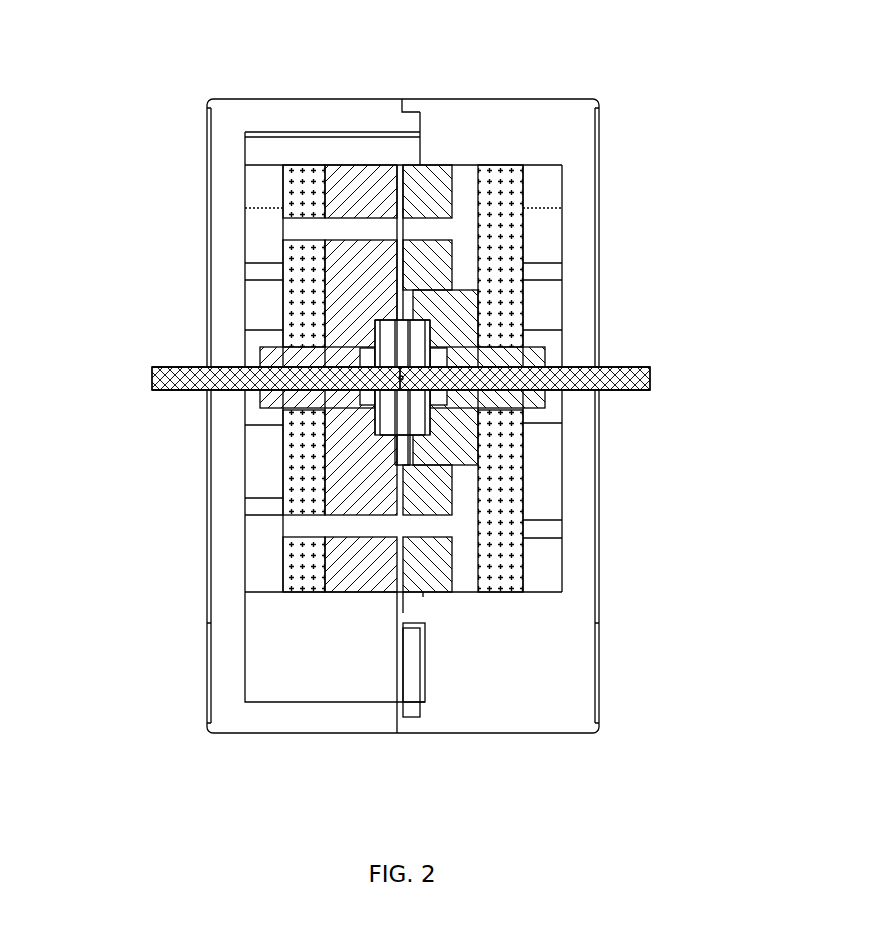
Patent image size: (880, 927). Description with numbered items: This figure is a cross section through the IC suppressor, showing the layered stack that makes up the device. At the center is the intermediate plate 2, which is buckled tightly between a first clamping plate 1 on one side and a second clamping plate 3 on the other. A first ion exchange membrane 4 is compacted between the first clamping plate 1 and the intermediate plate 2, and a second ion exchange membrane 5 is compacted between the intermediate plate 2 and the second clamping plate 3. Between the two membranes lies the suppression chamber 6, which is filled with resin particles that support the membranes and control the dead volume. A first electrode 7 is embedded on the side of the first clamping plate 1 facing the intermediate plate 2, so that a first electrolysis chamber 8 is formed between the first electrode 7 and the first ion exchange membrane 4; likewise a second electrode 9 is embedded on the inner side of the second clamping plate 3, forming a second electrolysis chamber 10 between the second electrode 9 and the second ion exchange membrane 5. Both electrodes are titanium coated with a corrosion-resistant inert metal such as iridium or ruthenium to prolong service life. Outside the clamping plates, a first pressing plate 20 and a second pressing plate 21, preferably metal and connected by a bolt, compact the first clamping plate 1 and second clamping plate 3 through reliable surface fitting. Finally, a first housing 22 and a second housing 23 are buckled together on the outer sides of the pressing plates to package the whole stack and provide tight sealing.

The first clamping plate 1 is at (350, 568).
The intermediate plate 2 is at (407, 550).
The second clamping plate 3 is at (447, 460).
The first ion exchange membrane 4 is at (393, 460).
The second ion exchange membrane 5 is at (410, 467).
The suppression chamber 6 is at (402, 332).
The first electrode 7 is at (175, 390).
The first electrolysis chamber 8 is at (383, 330).
The second electrode 9 is at (628, 392).
The second electrolysis chamber 10 is at (422, 330).
The first pressing plate 20 is at (303, 570).
The second pressing plate 21 is at (503, 487).
The first housing 22 is at (228, 508).
The second housing 23 is at (578, 453).